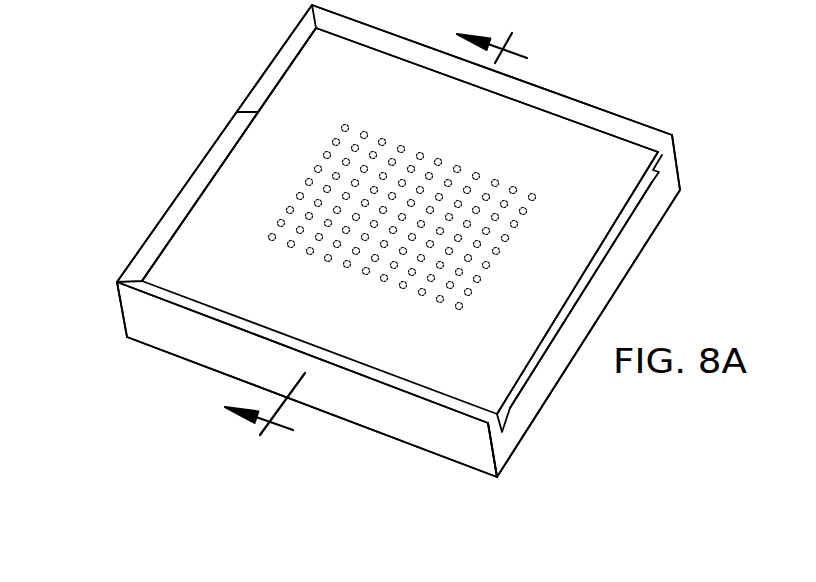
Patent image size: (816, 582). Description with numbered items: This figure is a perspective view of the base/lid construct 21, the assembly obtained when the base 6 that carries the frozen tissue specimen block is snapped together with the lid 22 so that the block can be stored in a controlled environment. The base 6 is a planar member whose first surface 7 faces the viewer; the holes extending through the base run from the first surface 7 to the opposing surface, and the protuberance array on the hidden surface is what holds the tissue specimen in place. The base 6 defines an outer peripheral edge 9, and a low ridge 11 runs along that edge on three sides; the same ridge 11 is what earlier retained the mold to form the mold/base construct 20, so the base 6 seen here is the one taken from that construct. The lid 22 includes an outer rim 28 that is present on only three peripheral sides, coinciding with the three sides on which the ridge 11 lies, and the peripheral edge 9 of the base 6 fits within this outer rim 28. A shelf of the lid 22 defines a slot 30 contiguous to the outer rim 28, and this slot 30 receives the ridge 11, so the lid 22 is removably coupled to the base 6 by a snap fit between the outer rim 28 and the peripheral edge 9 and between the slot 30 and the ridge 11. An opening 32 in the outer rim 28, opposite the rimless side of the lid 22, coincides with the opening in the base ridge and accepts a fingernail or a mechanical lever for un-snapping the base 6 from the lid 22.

The mold/base construct 20 is at (392, 238).
The base 6 is at (300, 50).
The first surface 7 is at (281, 147).
The outer peripheral edge 9 is at (596, 125).
The ridge 11 is at (660, 166).
The base/lid construct 21 is at (700, 238).
The lid 22 is at (587, 313).
The outer rim 28 is at (145, 240).
The slot 30 is at (507, 418).
The opening 32 is at (217, 160).